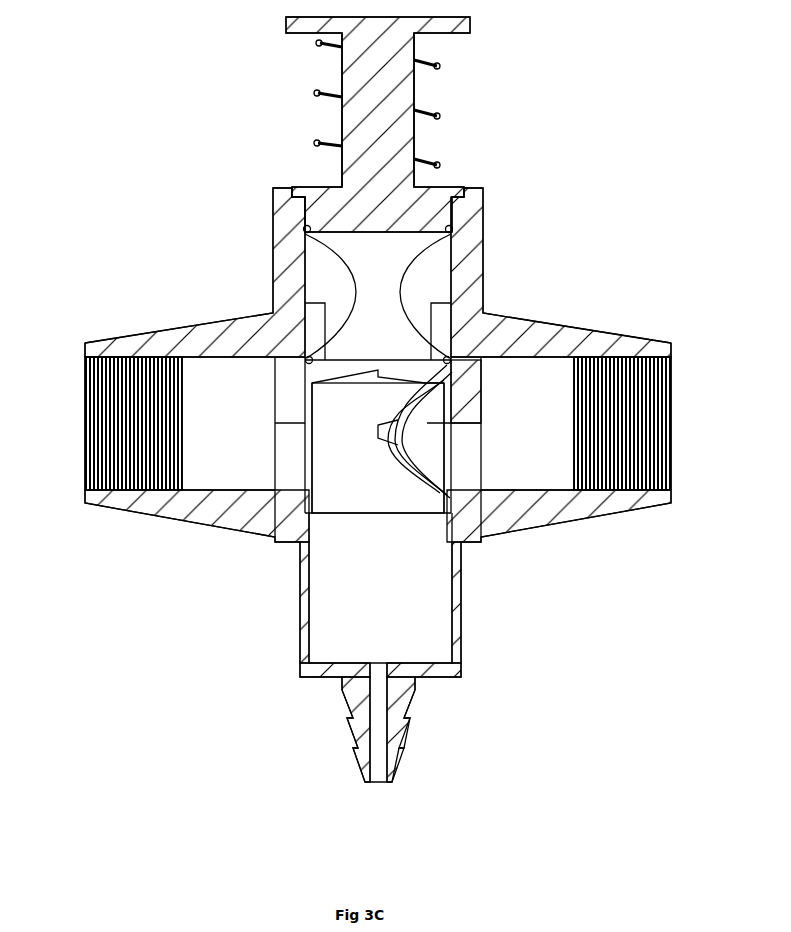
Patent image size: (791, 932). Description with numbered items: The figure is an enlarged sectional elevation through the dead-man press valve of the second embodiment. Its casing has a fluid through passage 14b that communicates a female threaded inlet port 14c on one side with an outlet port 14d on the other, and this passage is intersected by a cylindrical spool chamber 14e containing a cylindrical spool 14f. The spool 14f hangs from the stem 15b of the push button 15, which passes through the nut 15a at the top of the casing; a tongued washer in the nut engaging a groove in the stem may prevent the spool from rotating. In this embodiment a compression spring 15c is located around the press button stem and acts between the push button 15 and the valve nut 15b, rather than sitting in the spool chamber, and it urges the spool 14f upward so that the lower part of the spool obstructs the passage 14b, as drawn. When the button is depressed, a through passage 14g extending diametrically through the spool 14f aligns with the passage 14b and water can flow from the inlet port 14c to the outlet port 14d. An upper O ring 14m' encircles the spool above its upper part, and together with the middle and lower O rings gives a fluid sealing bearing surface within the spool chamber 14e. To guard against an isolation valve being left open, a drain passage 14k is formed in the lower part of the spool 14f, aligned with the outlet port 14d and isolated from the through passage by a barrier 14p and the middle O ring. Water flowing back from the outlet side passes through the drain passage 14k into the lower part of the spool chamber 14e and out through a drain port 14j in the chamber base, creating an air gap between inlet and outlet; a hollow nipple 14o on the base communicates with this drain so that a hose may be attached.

The push button 15 is at (463, 37).
The nut 15a is at (342, 186).
The stem 15b is at (342, 117).
The compression spring 15c is at (427, 122).
The barrier 14p is at (320, 333).
The fluid through passage 14b is at (223, 360).
The inlet port 14c is at (86, 496).
The outlet port 14d is at (625, 490).
The O ring 14m' is at (270, 246).
The through passage 14g is at (306, 229).
The drain passage 14k is at (355, 607).
The spool chamber 14e is at (355, 607).
The spool 14f is at (447, 568).
The drain port 14j is at (408, 715).
The hollow nipple 14o is at (355, 757).